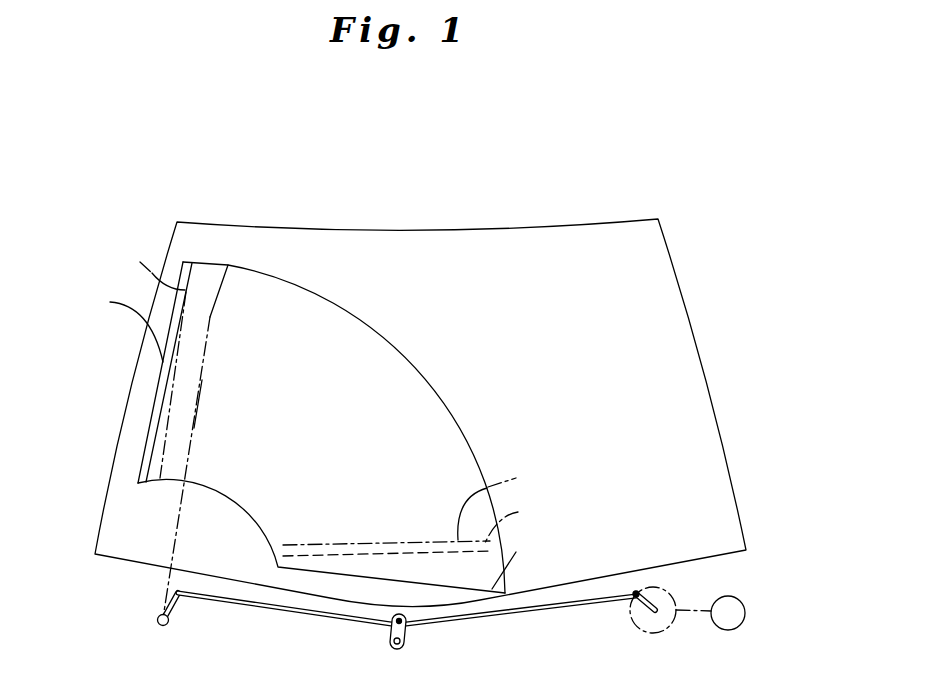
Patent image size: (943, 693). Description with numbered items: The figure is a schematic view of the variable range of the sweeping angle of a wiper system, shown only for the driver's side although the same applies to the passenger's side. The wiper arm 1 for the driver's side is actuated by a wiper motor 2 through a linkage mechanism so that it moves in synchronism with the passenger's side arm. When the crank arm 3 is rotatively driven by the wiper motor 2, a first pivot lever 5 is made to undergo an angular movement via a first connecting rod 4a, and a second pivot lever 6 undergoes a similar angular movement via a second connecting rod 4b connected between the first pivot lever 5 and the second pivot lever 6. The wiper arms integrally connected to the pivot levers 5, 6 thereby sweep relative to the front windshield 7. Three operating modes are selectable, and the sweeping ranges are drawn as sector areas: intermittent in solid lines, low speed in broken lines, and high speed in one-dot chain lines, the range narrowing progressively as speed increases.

The wiper arm 1 is at (170, 553).
The wiper motor 2 is at (723, 599).
The crank arm 3 is at (633, 618).
The first connecting rod 4a is at (542, 611).
The second connecting rod 4b is at (300, 612).
The first pivot lever 5 is at (405, 626).
The second pivot lever 6 is at (178, 607).
The front windshield 7 is at (552, 236).